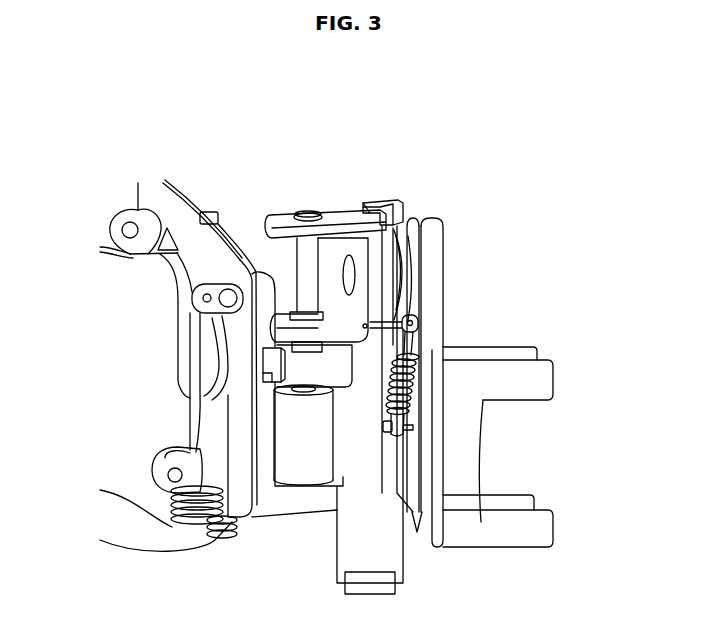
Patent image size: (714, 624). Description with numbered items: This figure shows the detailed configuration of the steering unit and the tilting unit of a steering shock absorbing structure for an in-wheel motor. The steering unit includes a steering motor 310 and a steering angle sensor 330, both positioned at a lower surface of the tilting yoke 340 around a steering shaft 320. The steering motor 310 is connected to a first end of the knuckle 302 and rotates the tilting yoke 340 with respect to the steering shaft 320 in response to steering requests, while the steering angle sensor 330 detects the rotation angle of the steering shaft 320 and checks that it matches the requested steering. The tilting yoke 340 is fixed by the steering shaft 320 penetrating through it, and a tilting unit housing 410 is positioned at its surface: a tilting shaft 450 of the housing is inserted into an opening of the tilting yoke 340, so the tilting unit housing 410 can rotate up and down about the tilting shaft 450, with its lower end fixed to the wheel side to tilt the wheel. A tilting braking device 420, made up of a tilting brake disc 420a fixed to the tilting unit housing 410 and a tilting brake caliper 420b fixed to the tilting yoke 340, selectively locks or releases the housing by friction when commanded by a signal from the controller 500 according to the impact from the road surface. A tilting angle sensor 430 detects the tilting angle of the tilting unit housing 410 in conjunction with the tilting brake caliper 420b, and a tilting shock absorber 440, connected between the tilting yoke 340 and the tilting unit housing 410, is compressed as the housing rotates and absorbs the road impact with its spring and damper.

The knuckle 302 is at (173, 204).
The steering motor 310 is at (283, 440).
The steering shaft 320 is at (302, 252).
The steering angle sensor 330 is at (263, 377).
The tilting yoke 340 is at (348, 213).
The tilting shaft 450 is at (347, 277).
The tilting braking device 420 is at (471, 308).
The tilting brake disc 420a is at (395, 203).
The tilting brake caliper 420b is at (393, 263).
The tilting angle sensor 430 is at (410, 287).
The tilting unit housing 410 is at (540, 372).
The tilting shock absorber 440 is at (403, 390).
The controller 500 is at (365, 572).